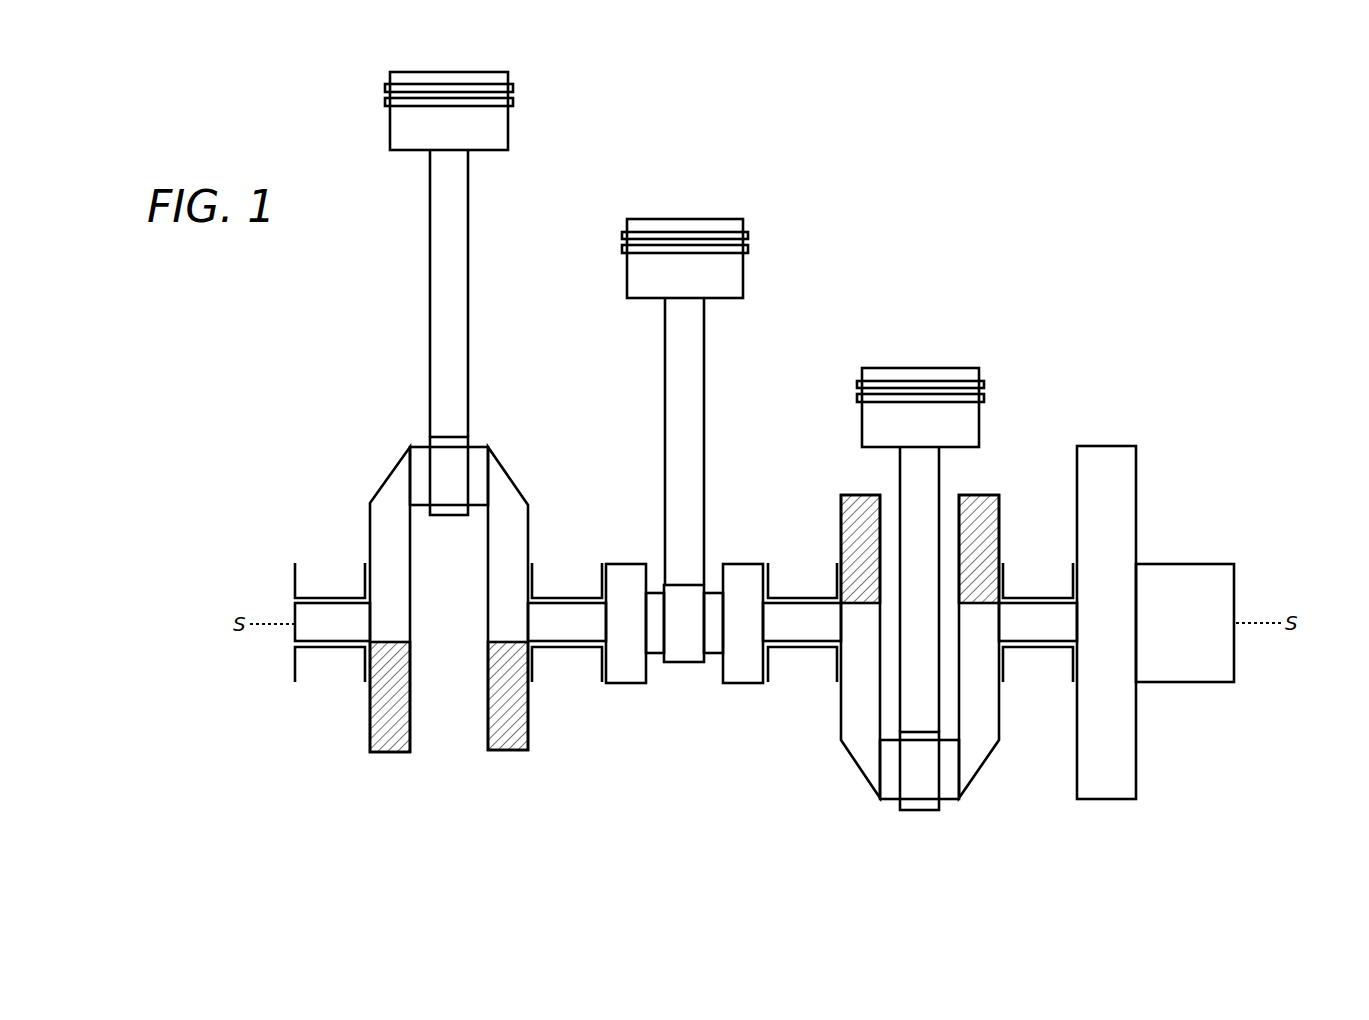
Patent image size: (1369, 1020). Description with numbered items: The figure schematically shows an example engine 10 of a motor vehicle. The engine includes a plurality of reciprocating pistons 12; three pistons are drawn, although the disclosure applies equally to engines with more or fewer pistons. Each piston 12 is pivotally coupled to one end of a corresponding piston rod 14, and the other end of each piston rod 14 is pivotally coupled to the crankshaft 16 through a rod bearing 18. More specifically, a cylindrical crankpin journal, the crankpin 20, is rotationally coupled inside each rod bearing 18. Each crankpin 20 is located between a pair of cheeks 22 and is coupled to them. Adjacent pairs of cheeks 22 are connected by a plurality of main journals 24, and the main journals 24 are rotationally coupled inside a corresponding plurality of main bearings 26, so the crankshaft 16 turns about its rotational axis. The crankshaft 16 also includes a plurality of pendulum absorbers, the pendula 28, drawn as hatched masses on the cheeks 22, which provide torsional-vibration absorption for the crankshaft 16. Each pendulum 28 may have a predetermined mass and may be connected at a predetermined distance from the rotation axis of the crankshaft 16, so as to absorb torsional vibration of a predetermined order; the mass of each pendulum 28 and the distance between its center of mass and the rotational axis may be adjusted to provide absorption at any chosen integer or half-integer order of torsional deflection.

The engine 10 is at (1095, 131).
The reciprocating piston 12 is at (437, 137).
The piston rod 14 is at (437, 302).
The crankshaft 16 is at (182, 443).
The rod bearing 18 is at (437, 484).
The crankpin 20 is at (477, 447).
The cheek 22 is at (379, 553).
The main journal 24 is at (322, 633).
The main bearing 26 is at (322, 671).
The pendulum absorber 28 is at (370, 733).